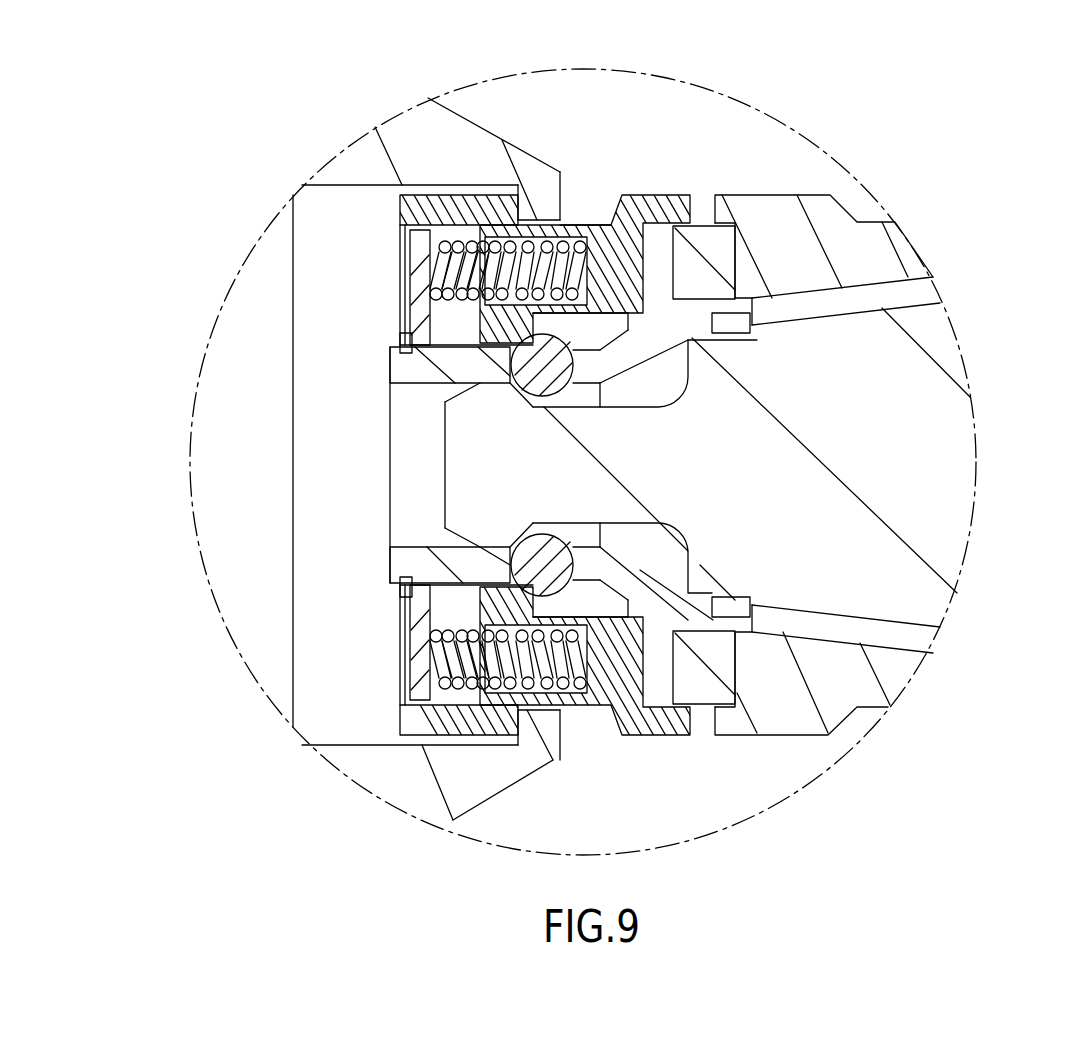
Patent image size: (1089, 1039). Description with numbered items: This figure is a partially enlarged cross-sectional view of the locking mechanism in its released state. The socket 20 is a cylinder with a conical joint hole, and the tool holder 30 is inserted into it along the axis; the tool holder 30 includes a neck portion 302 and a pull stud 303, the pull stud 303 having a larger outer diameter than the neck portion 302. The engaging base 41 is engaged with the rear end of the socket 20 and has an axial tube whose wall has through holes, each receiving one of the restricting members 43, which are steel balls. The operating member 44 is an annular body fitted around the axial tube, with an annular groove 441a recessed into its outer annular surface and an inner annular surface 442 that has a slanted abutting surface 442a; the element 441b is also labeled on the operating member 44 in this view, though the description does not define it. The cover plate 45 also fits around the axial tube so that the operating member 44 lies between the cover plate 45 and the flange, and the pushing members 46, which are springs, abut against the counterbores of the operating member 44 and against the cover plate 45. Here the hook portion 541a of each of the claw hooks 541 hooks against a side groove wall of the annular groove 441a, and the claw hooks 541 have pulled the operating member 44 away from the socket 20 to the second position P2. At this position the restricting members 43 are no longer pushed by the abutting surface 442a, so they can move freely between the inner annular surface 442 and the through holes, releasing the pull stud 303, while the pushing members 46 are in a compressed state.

The socket 20 is at (800, 735).
The tool holder 30 is at (886, 403).
The engaging base 41 is at (737, 271).
The restricting members 43 is at (523, 372).
The operating member 44 is at (668, 191).
The cover plate 45 is at (418, 665).
The pushing members 46 is at (460, 683).
The neck portion 302 is at (622, 500).
The pull stud 303 is at (488, 483).
The annular groove 441a is at (600, 213).
The spring seat 441b is at (512, 352).
The inner annular surface 442 is at (600, 327).
The abutting surface 442a is at (517, 333).
The claw hooks 541 is at (368, 165).
The hook portion 541a is at (543, 195).
The second position P2 is at (633, 167).